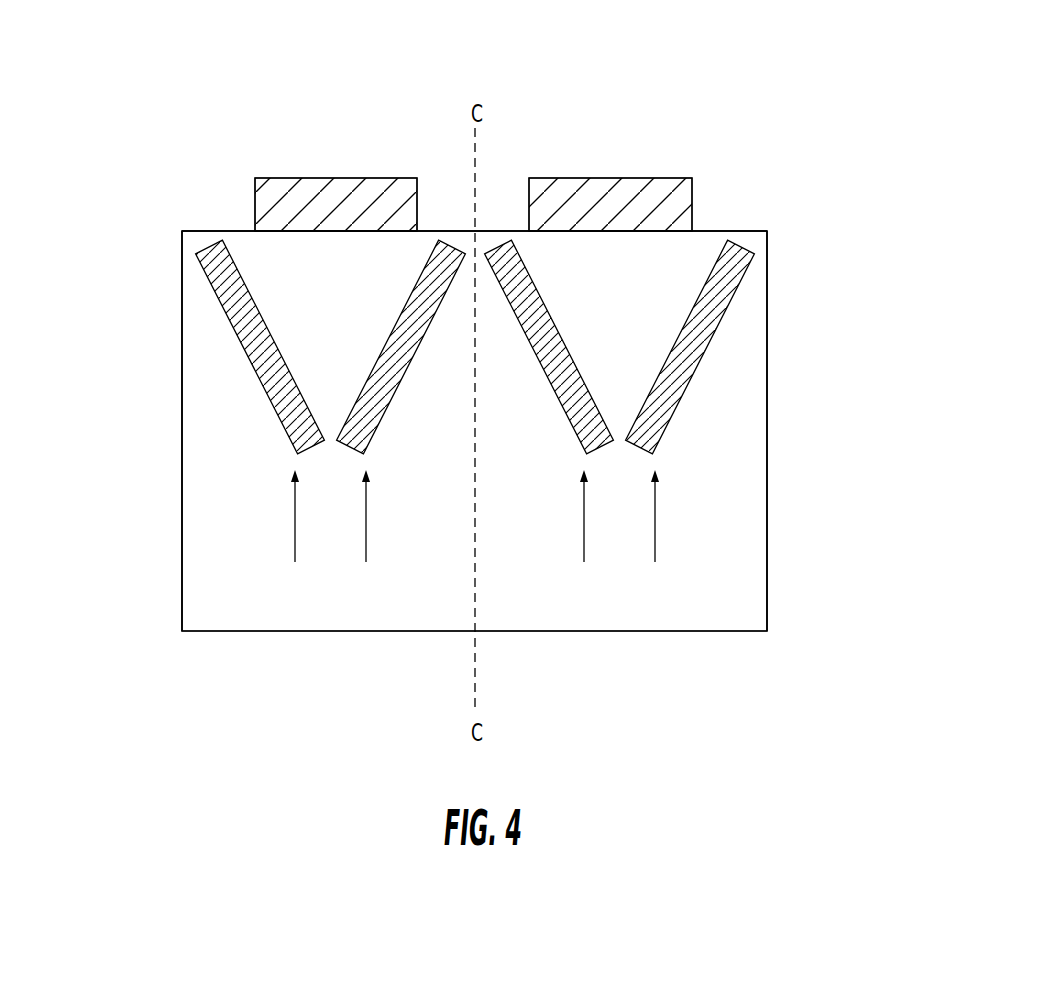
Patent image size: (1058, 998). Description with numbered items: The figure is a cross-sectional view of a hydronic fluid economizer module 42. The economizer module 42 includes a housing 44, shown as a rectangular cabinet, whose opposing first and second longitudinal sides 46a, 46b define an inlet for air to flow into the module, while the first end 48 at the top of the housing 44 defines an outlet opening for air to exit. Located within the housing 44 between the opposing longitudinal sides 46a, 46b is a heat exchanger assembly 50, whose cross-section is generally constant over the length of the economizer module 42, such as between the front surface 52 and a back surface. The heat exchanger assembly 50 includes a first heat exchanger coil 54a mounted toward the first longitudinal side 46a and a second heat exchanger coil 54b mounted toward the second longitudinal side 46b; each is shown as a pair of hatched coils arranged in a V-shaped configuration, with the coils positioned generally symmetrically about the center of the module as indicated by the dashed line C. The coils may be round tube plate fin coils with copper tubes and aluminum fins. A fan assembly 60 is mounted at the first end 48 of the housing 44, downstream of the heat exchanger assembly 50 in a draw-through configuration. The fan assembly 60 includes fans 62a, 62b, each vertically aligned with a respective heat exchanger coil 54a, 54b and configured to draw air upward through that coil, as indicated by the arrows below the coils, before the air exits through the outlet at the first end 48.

The economizer module 42 is at (885, 129).
The housing 44 is at (160, 609).
The first longitudinal side 46a is at (182, 432).
The second longitudinal side 46b is at (767, 507).
The first end 48 is at (217, 230).
The heat exchanger assembly 50 is at (226, 332).
The front surface 52 is at (753, 308).
The first heat exchanger coil 54a is at (285, 350).
The second heat exchanger coil 54b is at (576, 360).
The fan assembly 60 is at (249, 116).
The first fan 62a is at (335, 202).
The second fan 62b is at (610, 203).